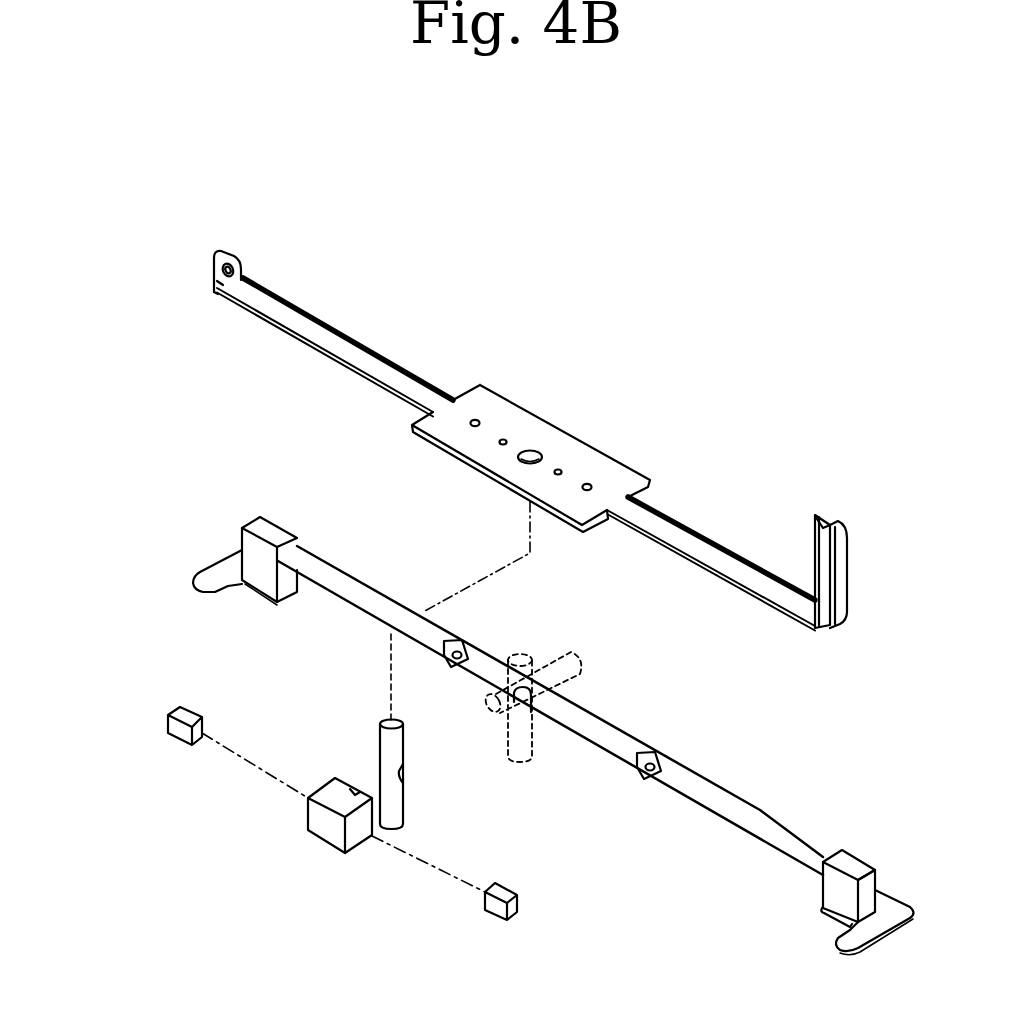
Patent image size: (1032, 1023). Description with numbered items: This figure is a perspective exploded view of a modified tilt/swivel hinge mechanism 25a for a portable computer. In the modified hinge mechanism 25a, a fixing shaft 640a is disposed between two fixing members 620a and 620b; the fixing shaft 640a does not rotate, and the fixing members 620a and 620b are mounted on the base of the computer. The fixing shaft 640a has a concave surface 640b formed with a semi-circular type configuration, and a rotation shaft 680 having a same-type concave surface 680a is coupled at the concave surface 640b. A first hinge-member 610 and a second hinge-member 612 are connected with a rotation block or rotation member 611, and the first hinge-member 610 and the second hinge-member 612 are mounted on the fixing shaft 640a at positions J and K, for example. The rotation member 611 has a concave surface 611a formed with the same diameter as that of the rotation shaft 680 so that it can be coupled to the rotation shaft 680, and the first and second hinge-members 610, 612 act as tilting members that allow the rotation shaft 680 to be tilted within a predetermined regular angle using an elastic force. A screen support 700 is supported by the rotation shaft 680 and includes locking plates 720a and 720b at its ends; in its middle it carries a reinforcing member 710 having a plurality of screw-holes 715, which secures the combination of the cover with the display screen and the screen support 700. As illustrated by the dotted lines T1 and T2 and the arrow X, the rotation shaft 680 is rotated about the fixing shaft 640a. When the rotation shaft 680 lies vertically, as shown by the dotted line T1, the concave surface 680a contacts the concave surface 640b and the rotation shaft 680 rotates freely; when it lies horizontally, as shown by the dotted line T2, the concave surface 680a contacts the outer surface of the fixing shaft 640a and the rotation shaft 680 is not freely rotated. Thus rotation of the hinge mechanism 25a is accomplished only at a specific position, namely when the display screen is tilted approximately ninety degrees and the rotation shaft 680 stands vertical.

The modified tilt/swivel hinge mechanism 25a is at (553, 199).
The screen support 700 is at (400, 377).
The reinforcing member 710 is at (531, 422).
The screw-holes 715 is at (477, 420).
The locking plate 720a is at (217, 261).
The locking plate 720b is at (813, 522).
The fixing member 620a is at (263, 573).
The fixing member 620b is at (823, 912).
The fixing shaft 640a is at (372, 605).
The concave surface 640b is at (530, 712).
The rotation shaft 680 is at (445, 777).
The concave surface 680a is at (401, 771).
The first hinge-member 610 is at (181, 727).
The rotation member 611 is at (302, 810).
The concave surface 611a is at (355, 792).
The second hinge-member 612 is at (497, 905).
The position J is at (456, 643).
The position K is at (650, 753).
The dotted line T1 is at (517, 654).
The dotted line T2 is at (575, 648).
The arrow X is at (555, 632).